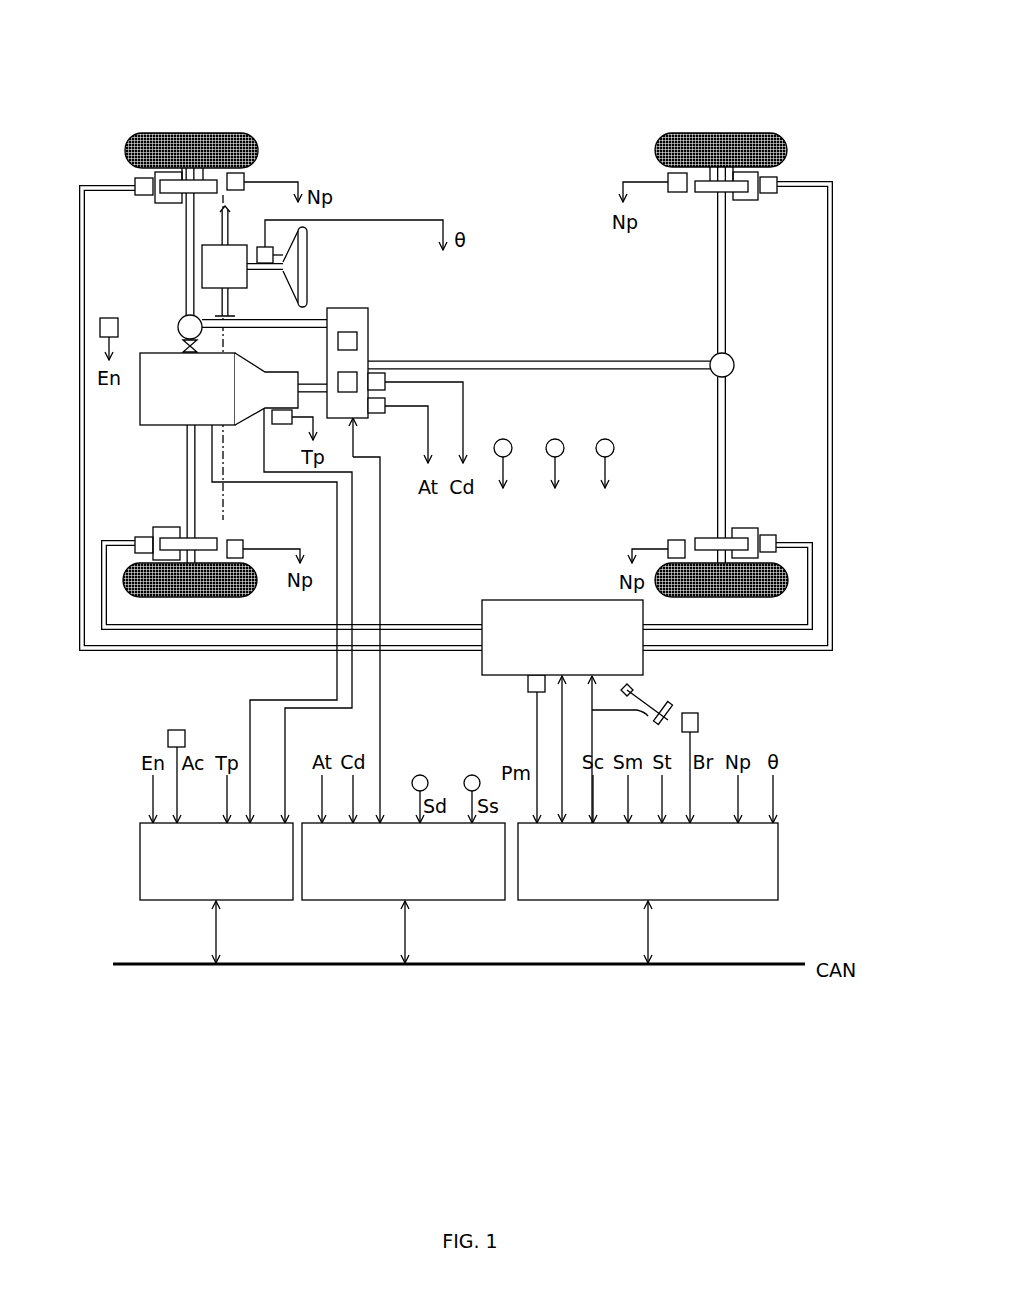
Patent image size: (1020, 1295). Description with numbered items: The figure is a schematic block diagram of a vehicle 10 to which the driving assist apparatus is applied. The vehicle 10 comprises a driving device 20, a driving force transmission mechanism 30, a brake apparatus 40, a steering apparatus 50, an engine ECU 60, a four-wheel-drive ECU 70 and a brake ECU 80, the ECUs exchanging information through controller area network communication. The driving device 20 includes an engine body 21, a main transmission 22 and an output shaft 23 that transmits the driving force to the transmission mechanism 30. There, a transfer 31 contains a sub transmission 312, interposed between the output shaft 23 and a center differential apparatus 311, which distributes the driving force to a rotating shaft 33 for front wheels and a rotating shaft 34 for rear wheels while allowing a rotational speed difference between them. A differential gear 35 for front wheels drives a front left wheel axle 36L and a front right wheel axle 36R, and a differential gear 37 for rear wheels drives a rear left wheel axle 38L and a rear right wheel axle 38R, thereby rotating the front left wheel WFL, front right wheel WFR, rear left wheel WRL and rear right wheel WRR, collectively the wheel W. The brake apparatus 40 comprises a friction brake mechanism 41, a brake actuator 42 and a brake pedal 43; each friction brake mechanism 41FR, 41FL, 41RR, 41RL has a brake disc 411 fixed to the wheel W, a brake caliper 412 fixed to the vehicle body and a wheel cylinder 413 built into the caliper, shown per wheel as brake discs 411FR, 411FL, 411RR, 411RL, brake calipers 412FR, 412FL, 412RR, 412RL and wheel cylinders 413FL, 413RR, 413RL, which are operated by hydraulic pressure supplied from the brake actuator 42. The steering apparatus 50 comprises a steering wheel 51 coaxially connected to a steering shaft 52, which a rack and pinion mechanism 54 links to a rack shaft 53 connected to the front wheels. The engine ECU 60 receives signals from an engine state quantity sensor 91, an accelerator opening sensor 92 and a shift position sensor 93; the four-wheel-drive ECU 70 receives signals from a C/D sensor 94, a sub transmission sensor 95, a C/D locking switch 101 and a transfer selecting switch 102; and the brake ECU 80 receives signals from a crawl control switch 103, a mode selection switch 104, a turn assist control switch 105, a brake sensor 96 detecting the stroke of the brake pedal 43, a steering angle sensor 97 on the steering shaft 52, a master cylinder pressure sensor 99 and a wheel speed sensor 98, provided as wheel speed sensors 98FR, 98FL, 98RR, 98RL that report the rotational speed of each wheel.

The vehicle 10 is at (514, 50).
The driving device 20 is at (71, 398).
The engine body 21 is at (139, 412).
The main transmission 22 is at (272, 368).
The output shaft 23 is at (312, 380).
The driving force transmission mechanism 30 is at (458, 331).
The transfer 31 is at (369, 330).
The center differential apparatus 311 is at (357, 332).
The sub transmission 312 is at (358, 375).
The rotating shaft for front wheels 33 is at (308, 320).
The rotating shaft for rear wheels 34 is at (640, 359).
The differential gear for front wheels 35 is at (177, 328).
The front right wheel axle 36R is at (184, 296).
The front left wheel axle 36L is at (198, 495).
The differential gear for rear wheels 37 is at (736, 365).
The rear right wheel axle 38R is at (728, 310).
The rear left wheel axle 38L is at (728, 412).
The brake apparatus 40 is at (300, 85).
The friction brake mechanism 41 is at (352, 85).
The brake disc 411 is at (153, 117).
The brake caliper 412 is at (205, 117).
The wheel cylinder 413 is at (253, 117).
The friction brake mechanism for front right wheel 41FR is at (76, 208).
The friction brake mechanism for front left wheel 41FL is at (76, 510).
The friction brake mechanism for rear right wheel 41RR is at (846, 178).
The friction brake mechanism for rear left wheel 41RL is at (847, 530).
The front right brake disc 411FR is at (122, 158).
The front right brake caliper 412FR is at (168, 204).
The front left wheel cylinder 413FL is at (146, 196).
The front left brake disc 411FL is at (178, 536).
The front left brake caliper 412FL is at (152, 530).
The rear right brake disc 411RR is at (726, 196).
The rear right brake caliper 412RR is at (758, 194).
The rear right wheel cylinder 413RR is at (778, 190).
The rear left brake disc 411RL is at (710, 536).
The rear left brake caliper 412RL is at (750, 528).
The rear left wheel cylinder 413RL is at (777, 537).
The brake actuator 42 is at (531, 600).
The brake pedal 43 is at (666, 703).
The steering apparatus 50 is at (374, 258).
The steering wheel 51 is at (309, 262).
The steering shaft 52 is at (270, 272).
The rack shaft 53 is at (232, 216).
The rack and pinion mechanism 54 is at (200, 273).
The engine ECU 60 is at (253, 905).
The 4WD ECU 70 is at (465, 905).
The brake ECU 80 is at (742, 905).
The engine state quantity sensor 91 is at (99, 328).
The accelerator opening sensor 92 is at (177, 729).
The shift position sensor 93 is at (284, 425).
The C/D sensor 94 is at (387, 384).
The sub transmission sensor 95 is at (384, 414).
The brake sensor 96 is at (699, 718).
The steering angle sensor 97 is at (350, 241).
The wheel speed sensor 98 is at (658, 85).
The front right wheel speed sensor 98FR is at (246, 176).
The front left wheel speed sensor 98FL is at (246, 546).
The rear right wheel speed sensor 98RR is at (676, 194).
The rear left wheel speed sensor 98RL is at (670, 540).
The master cylinder pressure sensor 99 is at (527, 685).
The C/D locking switch 101 is at (420, 775).
The transfer selecting switch 102 is at (472, 775).
The crawl control switch 103 is at (503, 439).
The mode selection switch 104 is at (555, 439).
The turn assist control switch 105 is at (605, 439).
The wheel W is at (773, 100).
The front right wheel WFR is at (258, 148).
The front left wheel WFL is at (252, 594).
The rear right wheel WRR is at (712, 131).
The rear left wheel WRL is at (725, 596).